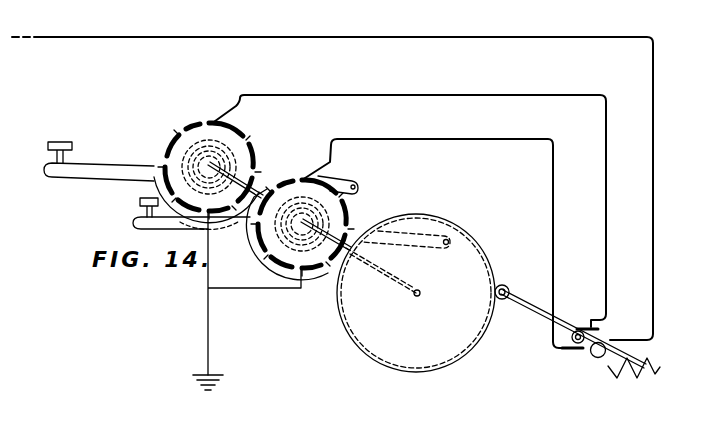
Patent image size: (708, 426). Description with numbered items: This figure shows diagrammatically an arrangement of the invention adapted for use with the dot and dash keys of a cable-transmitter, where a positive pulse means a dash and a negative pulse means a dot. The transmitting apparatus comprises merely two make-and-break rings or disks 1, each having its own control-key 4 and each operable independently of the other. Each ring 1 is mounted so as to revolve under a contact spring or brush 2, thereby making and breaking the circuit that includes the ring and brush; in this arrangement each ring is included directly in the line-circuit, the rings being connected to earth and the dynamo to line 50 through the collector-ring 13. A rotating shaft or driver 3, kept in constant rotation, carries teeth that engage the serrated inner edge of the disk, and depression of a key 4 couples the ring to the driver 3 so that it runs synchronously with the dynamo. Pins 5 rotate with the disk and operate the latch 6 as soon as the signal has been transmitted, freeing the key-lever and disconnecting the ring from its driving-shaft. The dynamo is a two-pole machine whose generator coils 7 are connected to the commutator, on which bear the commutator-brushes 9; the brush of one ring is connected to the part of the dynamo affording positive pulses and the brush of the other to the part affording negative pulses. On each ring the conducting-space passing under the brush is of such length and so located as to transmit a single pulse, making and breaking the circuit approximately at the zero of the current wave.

The line 50 is at (332, 175).
The contact spring or brush 2 is at (234, 116).
The make-and-break ring 1 is at (240, 143).
The pins 5 is at (250, 150).
The rotating shaft or driver 3 is at (278, 204).
The key 4 is at (115, 172).
The collector-ring 13 is at (596, 356).
The commutator-brushes 9 is at (590, 327).
The latch 6 is at (598, 350).
The generator coils 7 is at (638, 382).